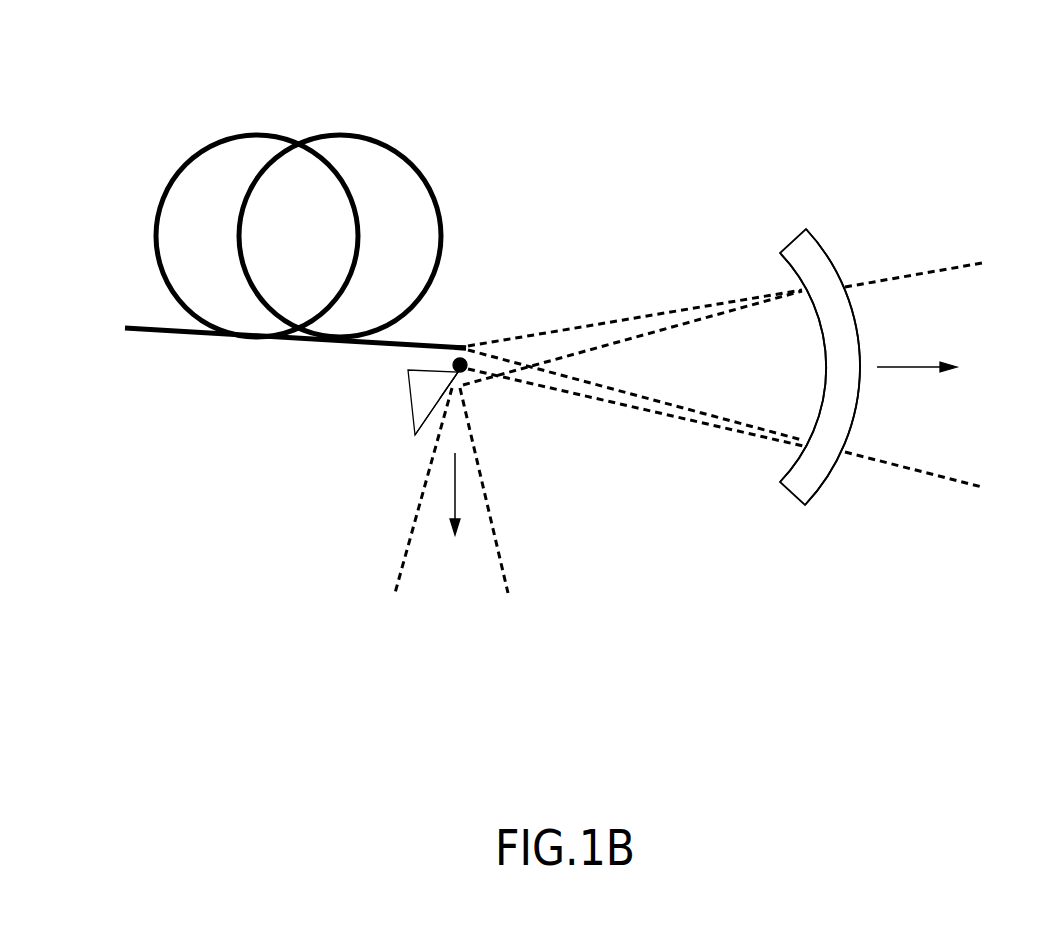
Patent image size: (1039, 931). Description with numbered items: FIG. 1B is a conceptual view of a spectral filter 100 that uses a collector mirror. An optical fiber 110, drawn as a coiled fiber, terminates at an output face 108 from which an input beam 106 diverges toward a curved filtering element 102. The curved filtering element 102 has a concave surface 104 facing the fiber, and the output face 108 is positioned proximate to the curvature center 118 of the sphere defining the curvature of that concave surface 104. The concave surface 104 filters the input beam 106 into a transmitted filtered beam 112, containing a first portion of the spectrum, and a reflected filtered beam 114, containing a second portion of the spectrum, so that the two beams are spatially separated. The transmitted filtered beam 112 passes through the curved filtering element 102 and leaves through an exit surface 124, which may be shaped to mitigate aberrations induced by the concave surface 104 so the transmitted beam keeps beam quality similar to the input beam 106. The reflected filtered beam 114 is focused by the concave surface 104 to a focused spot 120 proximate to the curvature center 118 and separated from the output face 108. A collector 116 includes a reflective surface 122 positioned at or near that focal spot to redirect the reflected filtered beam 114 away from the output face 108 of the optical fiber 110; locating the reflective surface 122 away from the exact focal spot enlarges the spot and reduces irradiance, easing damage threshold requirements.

The spectral filter 100 is at (122, 60).
The curved filtering element 102 is at (794, 243).
The concave surface 104 is at (800, 288).
The input beam 106 is at (528, 352).
The output face 108 is at (460, 335).
The optical fiber 110 is at (398, 143).
The transmitted filtered beam 112 is at (917, 305).
The reflected filtered beam 114 is at (528, 382).
The collector 116 is at (408, 398).
The curvature center 118 is at (454, 363).
The focused spot 120 is at (465, 393).
The reflective surface 122 is at (430, 415).
The exit surface 124 is at (823, 247).